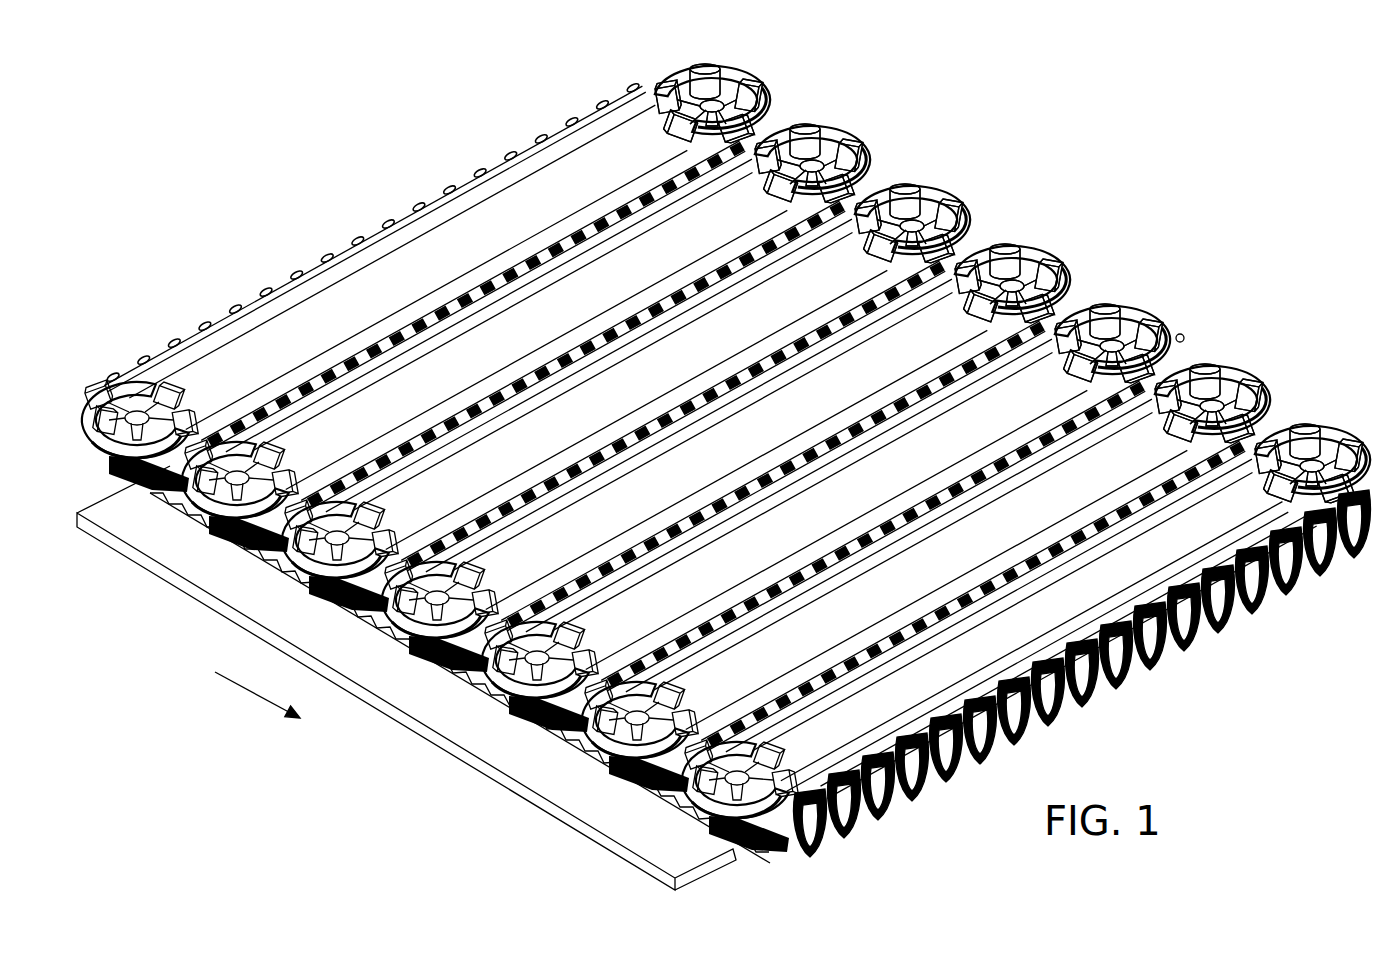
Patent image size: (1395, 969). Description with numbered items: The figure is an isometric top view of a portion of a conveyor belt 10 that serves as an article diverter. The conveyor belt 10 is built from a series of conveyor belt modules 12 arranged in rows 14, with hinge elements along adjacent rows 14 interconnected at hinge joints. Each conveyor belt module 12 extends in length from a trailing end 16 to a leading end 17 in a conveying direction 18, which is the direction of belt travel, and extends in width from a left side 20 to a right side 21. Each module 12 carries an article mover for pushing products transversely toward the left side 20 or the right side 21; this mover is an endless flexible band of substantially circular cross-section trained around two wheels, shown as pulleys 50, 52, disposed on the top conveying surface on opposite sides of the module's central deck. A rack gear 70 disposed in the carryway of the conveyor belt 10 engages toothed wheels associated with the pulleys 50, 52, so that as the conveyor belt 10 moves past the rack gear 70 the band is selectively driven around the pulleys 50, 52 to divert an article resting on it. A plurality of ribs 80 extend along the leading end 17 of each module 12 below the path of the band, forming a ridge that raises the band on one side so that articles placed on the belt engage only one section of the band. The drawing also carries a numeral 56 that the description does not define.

The conveyor belt 10 is at (441, 112).
The conveyor belt module 12 is at (1009, 651).
The row 14 is at (1352, 406).
The trailing end 16 is at (374, 211).
The leading end 17 is at (1075, 729).
The conveying direction 18 is at (268, 707).
The left side 20 is at (482, 762).
The right side 21 is at (1182, 336).
The pulley 50 is at (772, 751).
The pulley 52 is at (1270, 488).
The first return end guide 56 is at (175, 390).
The rack gear 70 is at (360, 660).
The ribs 80 is at (924, 773).